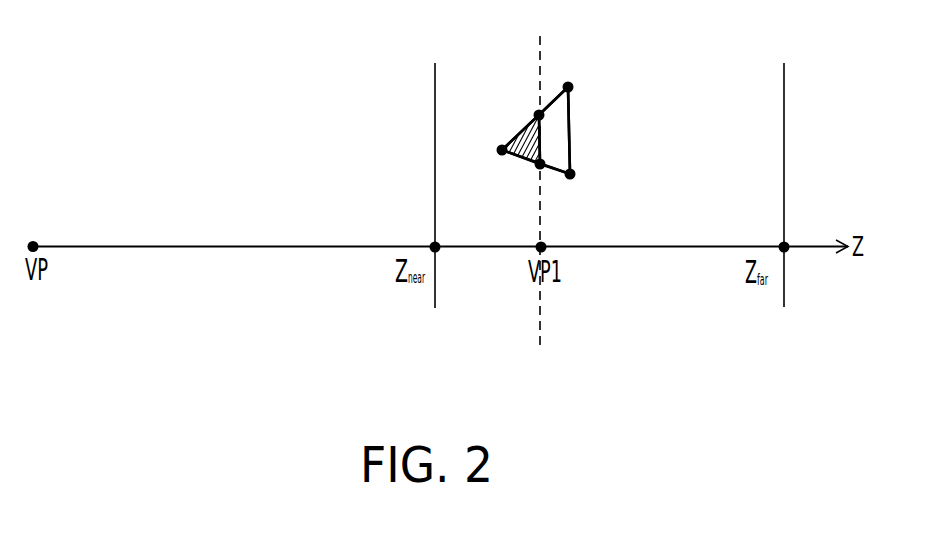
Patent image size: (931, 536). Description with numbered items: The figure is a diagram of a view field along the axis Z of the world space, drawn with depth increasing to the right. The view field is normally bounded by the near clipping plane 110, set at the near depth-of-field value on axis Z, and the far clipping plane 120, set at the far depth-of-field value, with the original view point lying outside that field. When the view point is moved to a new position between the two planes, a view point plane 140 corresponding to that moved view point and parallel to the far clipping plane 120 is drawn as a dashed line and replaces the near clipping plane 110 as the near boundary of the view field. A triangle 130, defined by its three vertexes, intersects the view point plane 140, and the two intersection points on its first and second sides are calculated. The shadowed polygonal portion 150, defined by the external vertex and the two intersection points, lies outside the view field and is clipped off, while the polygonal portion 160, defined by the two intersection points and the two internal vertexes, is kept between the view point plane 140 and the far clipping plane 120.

The near clipping plane 110 is at (437, 167).
The far clipping plane 120 is at (786, 167).
The triangle 130 is at (548, 95).
The view point plane 140 is at (541, 177).
The polygonal portion 150 is at (522, 164).
The polygonal portion 160 is at (562, 140).